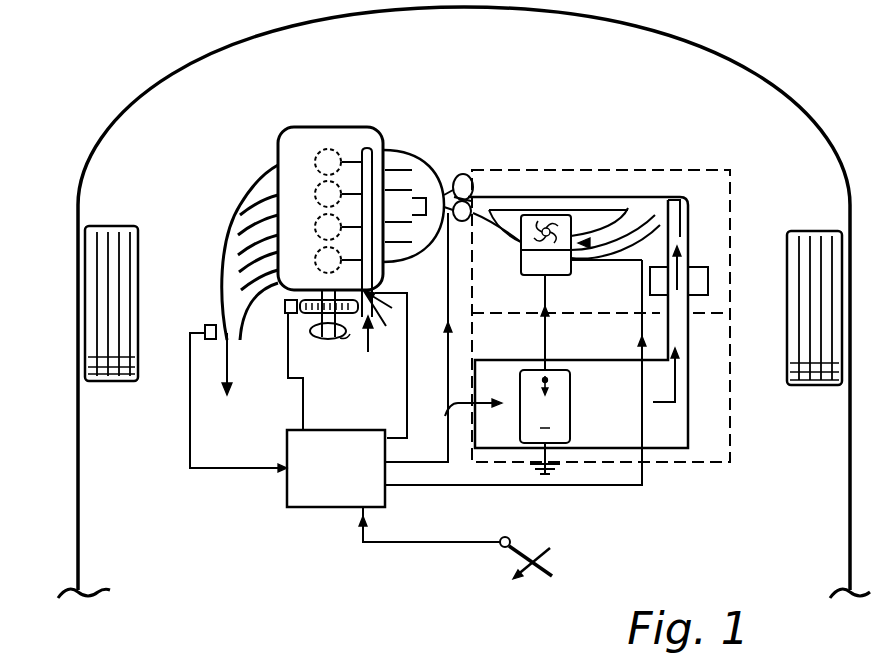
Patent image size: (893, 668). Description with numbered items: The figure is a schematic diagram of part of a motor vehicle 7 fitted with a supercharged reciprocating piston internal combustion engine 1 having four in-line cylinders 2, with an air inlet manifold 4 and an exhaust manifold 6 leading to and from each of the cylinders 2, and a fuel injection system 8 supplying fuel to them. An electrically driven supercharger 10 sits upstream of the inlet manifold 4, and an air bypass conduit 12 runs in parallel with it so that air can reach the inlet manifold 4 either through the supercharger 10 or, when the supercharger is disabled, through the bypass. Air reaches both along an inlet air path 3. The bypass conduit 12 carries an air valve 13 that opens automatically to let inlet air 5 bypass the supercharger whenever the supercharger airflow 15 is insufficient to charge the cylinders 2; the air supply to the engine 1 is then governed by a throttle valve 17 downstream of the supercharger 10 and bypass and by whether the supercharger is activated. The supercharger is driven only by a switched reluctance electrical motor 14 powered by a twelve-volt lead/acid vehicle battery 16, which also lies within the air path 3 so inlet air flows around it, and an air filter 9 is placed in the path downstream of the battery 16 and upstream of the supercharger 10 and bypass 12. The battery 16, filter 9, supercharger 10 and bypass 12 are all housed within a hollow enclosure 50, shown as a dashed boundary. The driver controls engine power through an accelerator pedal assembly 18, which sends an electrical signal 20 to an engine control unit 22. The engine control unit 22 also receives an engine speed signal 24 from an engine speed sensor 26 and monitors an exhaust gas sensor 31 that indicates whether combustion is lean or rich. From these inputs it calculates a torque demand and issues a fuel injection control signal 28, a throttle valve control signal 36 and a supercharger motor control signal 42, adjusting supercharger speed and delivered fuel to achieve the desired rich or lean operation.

The internal combustion engine 1 is at (262, 150).
The cylinders 2 is at (322, 192).
The inlet air path 3 is at (688, 197).
The air inlet manifold 4 is at (424, 168).
The inlet air 5 is at (457, 403).
The exhaust manifold 6 is at (226, 227).
The motor vehicle 7 is at (166, 71).
The fuel injection system 8 is at (380, 251).
The air filter 9 is at (708, 283).
The electrically driven supercharger 10 is at (594, 245).
The air bypass conduit 12 is at (545, 196).
The air valve 13 is at (604, 195).
The switched reluctance electrical motor 14 is at (572, 272).
The supercharger airflow 15 is at (688, 217).
The vehicle battery 16 is at (571, 408).
The throttle valve 17 is at (457, 182).
The accelerator pedal assembly 18 is at (527, 545).
The electrical signal 20 is at (412, 545).
The engine control unit 22 is at (302, 508).
The engine speed signal 24 is at (301, 399).
The engine speed sensor 26 is at (282, 312).
The fuel injection control signal 28 is at (406, 383).
The exhaust gas sensor 31 is at (206, 324).
The throttle valve control signal 36 is at (447, 338).
The supercharger motor control signal 42 is at (640, 322).
The hollow enclosure 50 is at (732, 455).